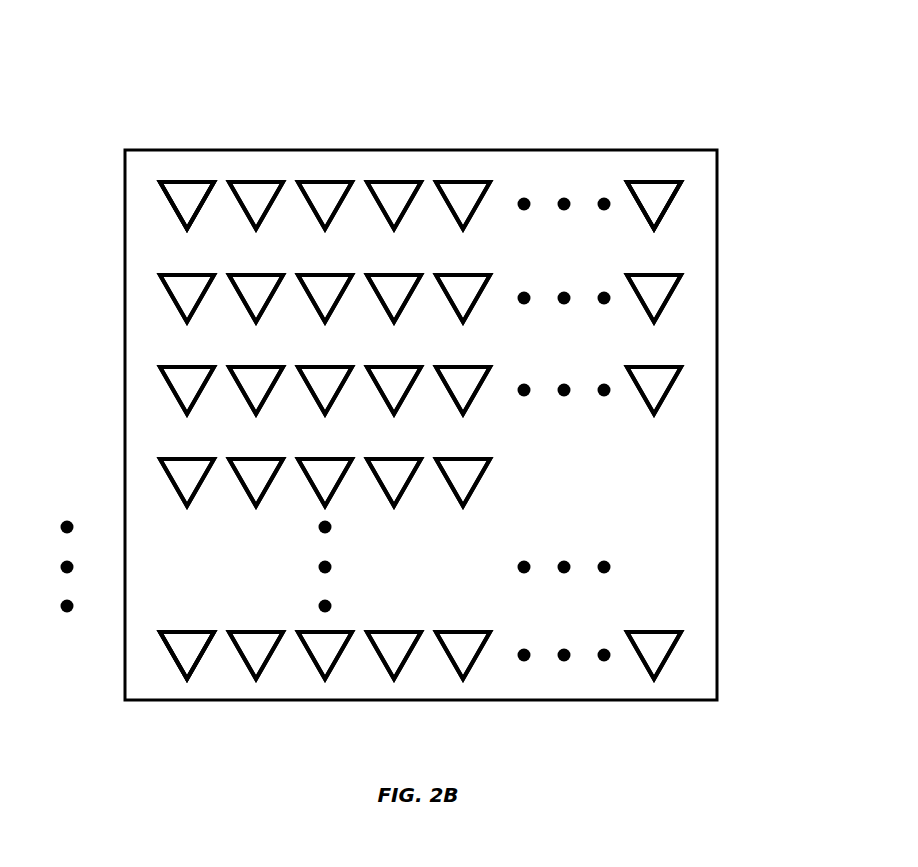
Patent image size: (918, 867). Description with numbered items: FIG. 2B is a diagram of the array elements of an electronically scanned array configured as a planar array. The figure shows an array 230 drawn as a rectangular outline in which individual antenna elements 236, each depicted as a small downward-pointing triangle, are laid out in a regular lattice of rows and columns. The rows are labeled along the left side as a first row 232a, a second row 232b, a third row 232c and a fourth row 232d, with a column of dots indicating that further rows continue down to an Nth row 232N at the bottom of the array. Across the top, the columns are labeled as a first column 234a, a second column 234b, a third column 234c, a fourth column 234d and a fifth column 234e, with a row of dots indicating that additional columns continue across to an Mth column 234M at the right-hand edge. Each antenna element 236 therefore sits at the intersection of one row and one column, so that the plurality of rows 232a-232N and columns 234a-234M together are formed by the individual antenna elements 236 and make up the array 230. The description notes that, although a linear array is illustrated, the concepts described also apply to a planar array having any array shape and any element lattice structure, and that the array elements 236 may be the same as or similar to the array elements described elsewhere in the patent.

The array 230 is at (702, 150).
The first row 232a is at (155, 207).
The second row 232b is at (155, 302).
The third row 232c is at (155, 396).
The fourth row 232d is at (155, 484).
The Nth row 232N is at (155, 654).
The first column 234a is at (188, 166).
The second column 234b is at (257, 166).
The third column 234c is at (322, 166).
The fourth column 234d is at (393, 166).
The fifth column 234e is at (468, 166).
The Mth column 234M is at (652, 166).
The antenna element 236 is at (166, 188).